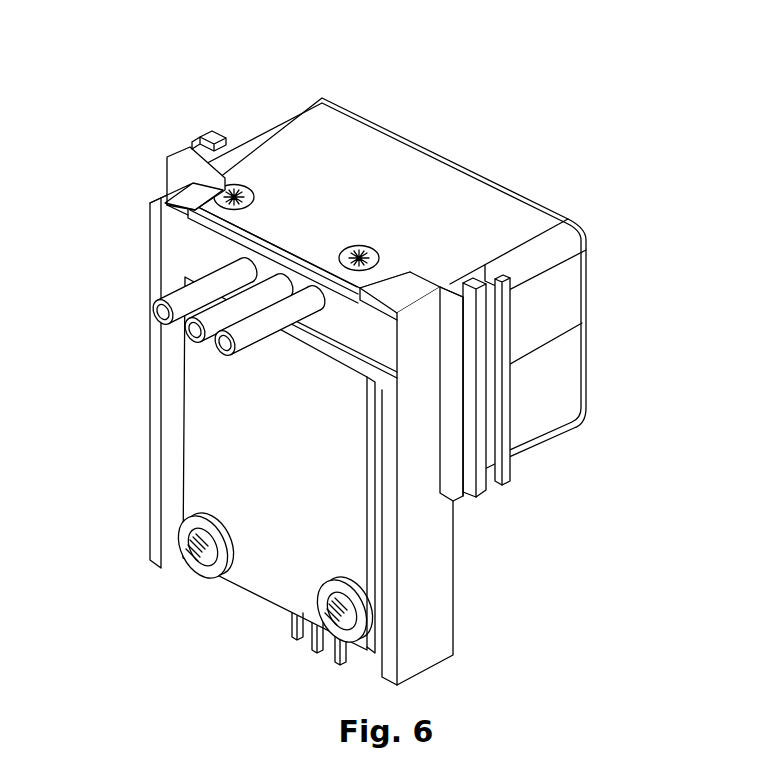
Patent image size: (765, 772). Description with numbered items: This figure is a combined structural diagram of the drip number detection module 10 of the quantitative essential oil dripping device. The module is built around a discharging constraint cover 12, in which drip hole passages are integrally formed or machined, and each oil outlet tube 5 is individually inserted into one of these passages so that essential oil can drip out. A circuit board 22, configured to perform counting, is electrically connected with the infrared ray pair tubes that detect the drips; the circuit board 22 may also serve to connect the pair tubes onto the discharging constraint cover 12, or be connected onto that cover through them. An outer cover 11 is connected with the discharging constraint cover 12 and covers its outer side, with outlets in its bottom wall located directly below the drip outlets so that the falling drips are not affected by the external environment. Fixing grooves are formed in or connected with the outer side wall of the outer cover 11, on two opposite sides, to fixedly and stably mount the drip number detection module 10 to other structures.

The drip number detection module 10 is at (377, 345).
The outer cover 11 is at (449, 292).
The discharging constraint cover 12 is at (179, 121).
The oil outlet tube 5 is at (224, 276).
The circuit board 22 is at (245, 483).